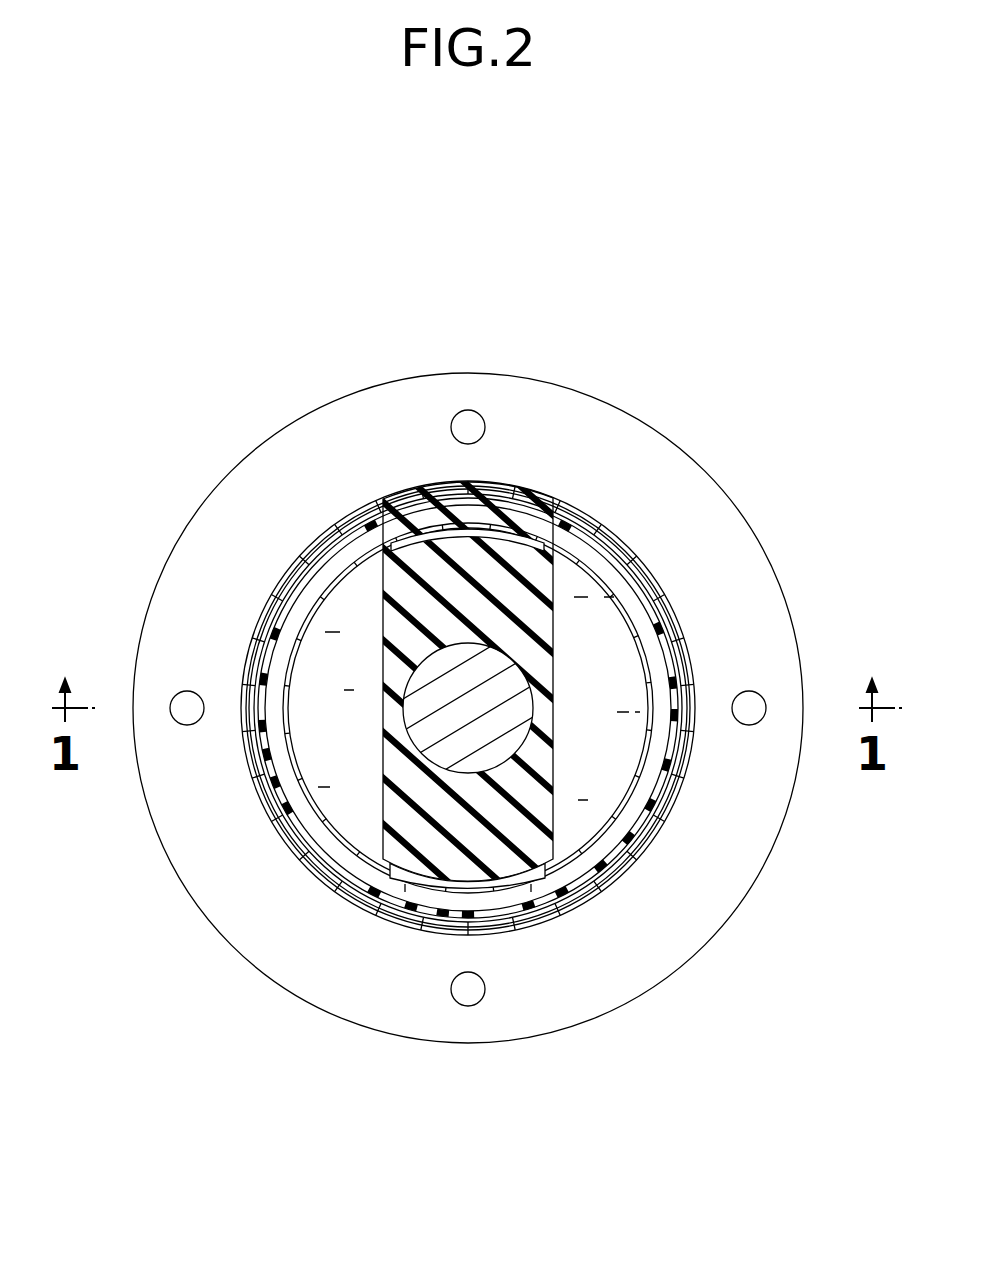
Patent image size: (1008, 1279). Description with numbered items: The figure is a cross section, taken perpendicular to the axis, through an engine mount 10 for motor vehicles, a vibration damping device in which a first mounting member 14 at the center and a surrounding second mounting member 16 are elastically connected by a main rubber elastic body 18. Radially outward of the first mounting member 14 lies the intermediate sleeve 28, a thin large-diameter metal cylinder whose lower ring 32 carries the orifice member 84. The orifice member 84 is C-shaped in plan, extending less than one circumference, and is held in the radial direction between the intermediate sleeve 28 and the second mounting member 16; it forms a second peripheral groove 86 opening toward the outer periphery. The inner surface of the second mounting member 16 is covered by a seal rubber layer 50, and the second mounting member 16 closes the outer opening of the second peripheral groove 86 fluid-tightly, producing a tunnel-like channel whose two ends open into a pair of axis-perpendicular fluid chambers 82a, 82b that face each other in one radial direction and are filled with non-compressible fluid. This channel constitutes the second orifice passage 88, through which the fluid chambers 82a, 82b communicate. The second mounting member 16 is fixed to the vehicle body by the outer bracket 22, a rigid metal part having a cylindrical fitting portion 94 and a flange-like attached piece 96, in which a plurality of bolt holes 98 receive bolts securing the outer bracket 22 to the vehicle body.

The engine mount 10 is at (667, 389).
The first mounting member 14 is at (505, 723).
The second mounting member 16 is at (308, 563).
The main rubber elastic body 18 is at (538, 814).
The outer bracket 22 is at (730, 492).
The intermediate sleeve 28 is at (510, 884).
The lower ring 32 is at (407, 871).
The seal rubber layer 50 is at (270, 770).
The axis-perpendicular fluid chamber 82a is at (336, 709).
The axis-perpendicular fluid chamber 82b is at (607, 698).
The orifice member 84 is at (328, 825).
The second peripheral groove 86 is at (282, 695).
The second orifice passage 88 is at (580, 868).
The fitting portion 94 is at (673, 626).
The attached piece 96 is at (761, 777).
The bolt holes 98 is at (468, 417).